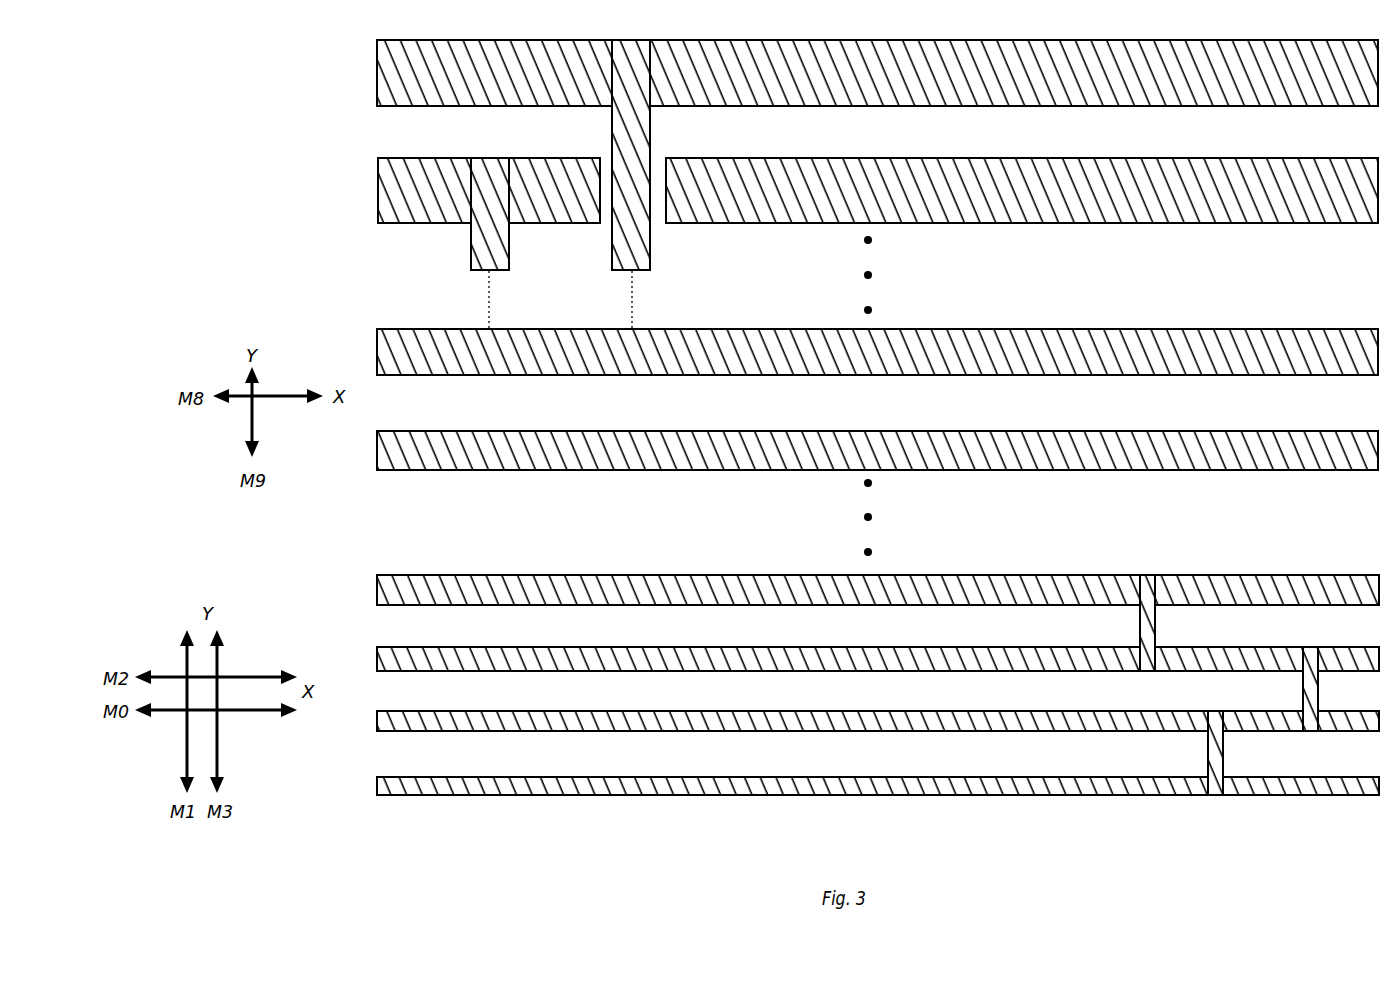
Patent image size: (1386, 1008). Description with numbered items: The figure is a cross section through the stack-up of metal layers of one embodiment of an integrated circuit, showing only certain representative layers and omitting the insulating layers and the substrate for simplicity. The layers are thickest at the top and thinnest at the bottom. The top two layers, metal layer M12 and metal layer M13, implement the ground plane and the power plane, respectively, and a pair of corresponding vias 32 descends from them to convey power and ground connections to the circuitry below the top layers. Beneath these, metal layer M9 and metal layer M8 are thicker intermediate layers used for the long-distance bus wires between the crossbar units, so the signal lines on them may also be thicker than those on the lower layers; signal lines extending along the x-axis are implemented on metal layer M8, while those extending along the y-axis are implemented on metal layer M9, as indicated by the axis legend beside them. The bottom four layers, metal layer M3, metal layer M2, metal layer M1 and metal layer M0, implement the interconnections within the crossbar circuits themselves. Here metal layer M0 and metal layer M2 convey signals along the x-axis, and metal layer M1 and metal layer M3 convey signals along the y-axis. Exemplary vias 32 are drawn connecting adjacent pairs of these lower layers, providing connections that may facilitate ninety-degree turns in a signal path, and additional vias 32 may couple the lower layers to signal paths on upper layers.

The via 32 is at (513, 281).
The metal layer M13 is at (814, 73).
The metal layer M12 is at (809, 190).
The metal layer M9 is at (861, 352).
The metal layer M8 is at (861, 450).
The metal layer M3 is at (862, 590).
The metal layer M2 is at (862, 659).
The metal layer M1 is at (862, 722).
The metal layer M0 is at (862, 788).